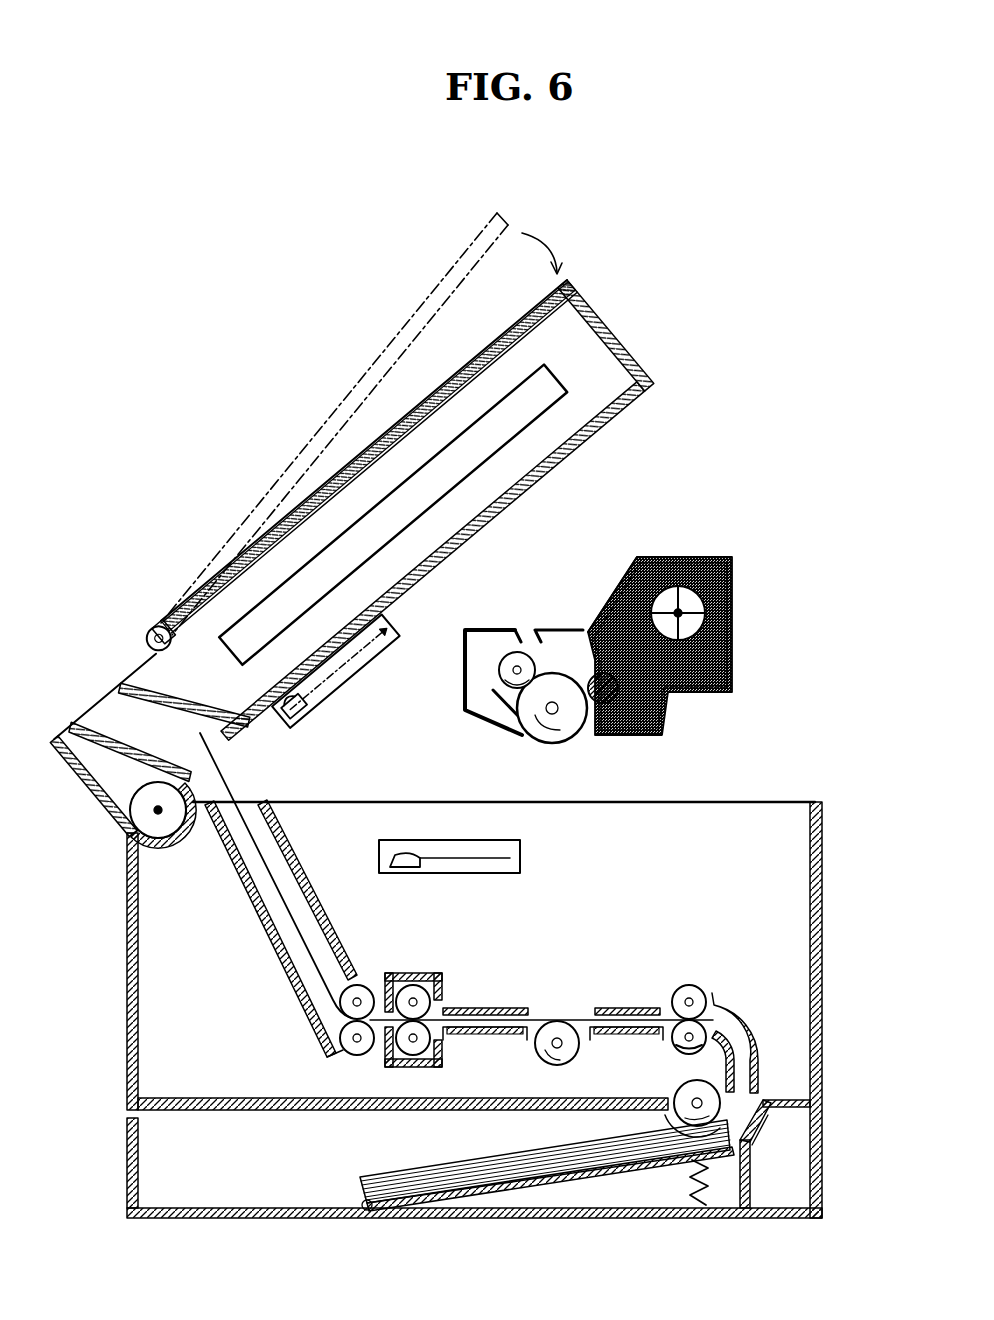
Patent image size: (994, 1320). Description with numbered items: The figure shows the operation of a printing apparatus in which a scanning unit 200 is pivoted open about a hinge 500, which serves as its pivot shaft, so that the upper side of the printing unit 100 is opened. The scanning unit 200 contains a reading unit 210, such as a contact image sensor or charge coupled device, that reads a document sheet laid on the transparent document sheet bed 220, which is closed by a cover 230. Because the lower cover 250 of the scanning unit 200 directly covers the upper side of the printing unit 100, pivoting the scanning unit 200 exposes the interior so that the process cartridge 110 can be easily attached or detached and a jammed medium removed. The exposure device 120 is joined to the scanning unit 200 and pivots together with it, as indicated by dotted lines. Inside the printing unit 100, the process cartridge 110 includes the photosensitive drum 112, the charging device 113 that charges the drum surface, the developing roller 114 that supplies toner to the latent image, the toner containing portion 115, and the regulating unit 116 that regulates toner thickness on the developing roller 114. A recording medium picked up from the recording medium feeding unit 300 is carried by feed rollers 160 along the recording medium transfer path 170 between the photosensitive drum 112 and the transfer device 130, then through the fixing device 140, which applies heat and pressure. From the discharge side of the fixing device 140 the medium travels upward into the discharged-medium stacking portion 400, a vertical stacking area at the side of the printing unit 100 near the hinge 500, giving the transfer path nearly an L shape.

The printing unit 100 is at (827, 965).
The process cartridge 110 is at (740, 620).
The photosensitive drum 112 is at (553, 678).
The charging device 113 is at (498, 668).
The developing roller 114 is at (586, 645).
The toner containing portion 115 is at (735, 664).
The regulating unit 116 is at (628, 570).
The exposure device 120 is at (343, 683).
The transfer device 130 is at (570, 1063).
The fixing device 140 is at (385, 972).
The feed rollers 160 is at (677, 1045).
The recording medium transfer path 170 is at (490, 1033).
The scanning unit 200 is at (615, 323).
The reading unit 210 is at (380, 500).
The document sheet bed 220 is at (455, 388).
The cover 230 is at (498, 343).
The lower cover 250 is at (567, 448).
The recording medium feeding unit 300 is at (830, 1140).
The discharged-medium stacking portion 400 is at (260, 880).
The hinge 500 is at (150, 810).